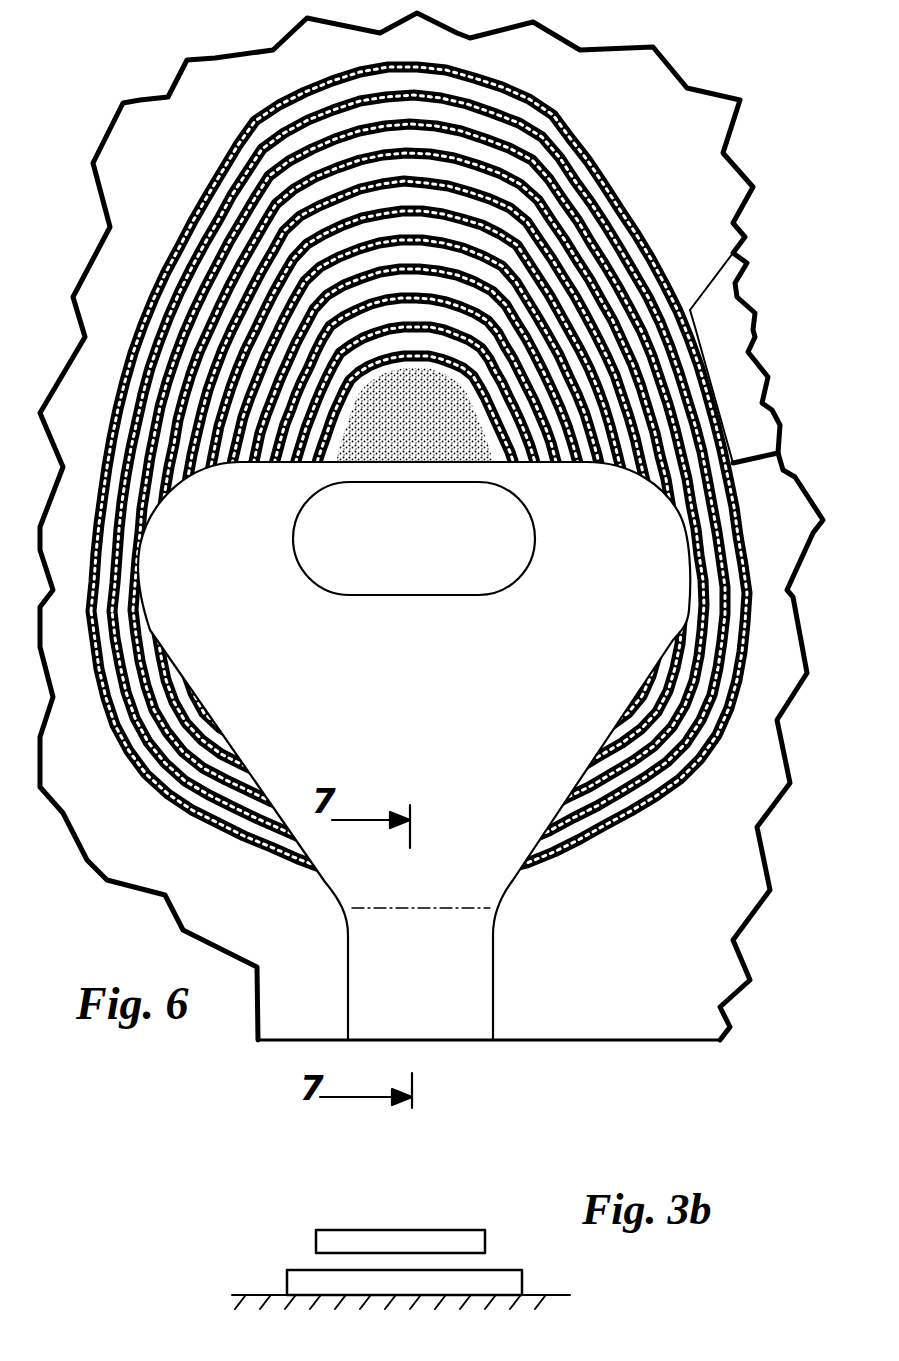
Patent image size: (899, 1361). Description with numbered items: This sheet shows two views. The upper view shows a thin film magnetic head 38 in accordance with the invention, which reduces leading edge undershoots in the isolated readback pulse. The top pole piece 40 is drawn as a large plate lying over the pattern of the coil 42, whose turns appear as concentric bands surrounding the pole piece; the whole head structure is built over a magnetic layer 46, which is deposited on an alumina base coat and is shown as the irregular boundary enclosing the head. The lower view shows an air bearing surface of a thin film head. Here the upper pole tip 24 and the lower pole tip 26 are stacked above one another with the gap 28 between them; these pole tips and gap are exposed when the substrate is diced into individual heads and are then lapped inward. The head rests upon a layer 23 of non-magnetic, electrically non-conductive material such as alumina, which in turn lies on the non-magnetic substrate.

In FIG. 6, the thin film magnetic head 38 is at (625, 152).
In FIG. 6, the top pole piece 40 is at (647, 553).
In FIG. 6, the coil 42 is at (197, 193).
In FIG. 6, the magnetic layer 46 is at (720, 923).
In FIG. 3B, the upper pole tip 24 is at (478, 1236).
In FIG. 3B, the lower pole tip 26 is at (510, 1284).
In FIG. 3B, the gap 28 is at (483, 1262).
In FIG. 3B, the layer of non-magnetic, electrically non-conductive material 23 is at (540, 1303).